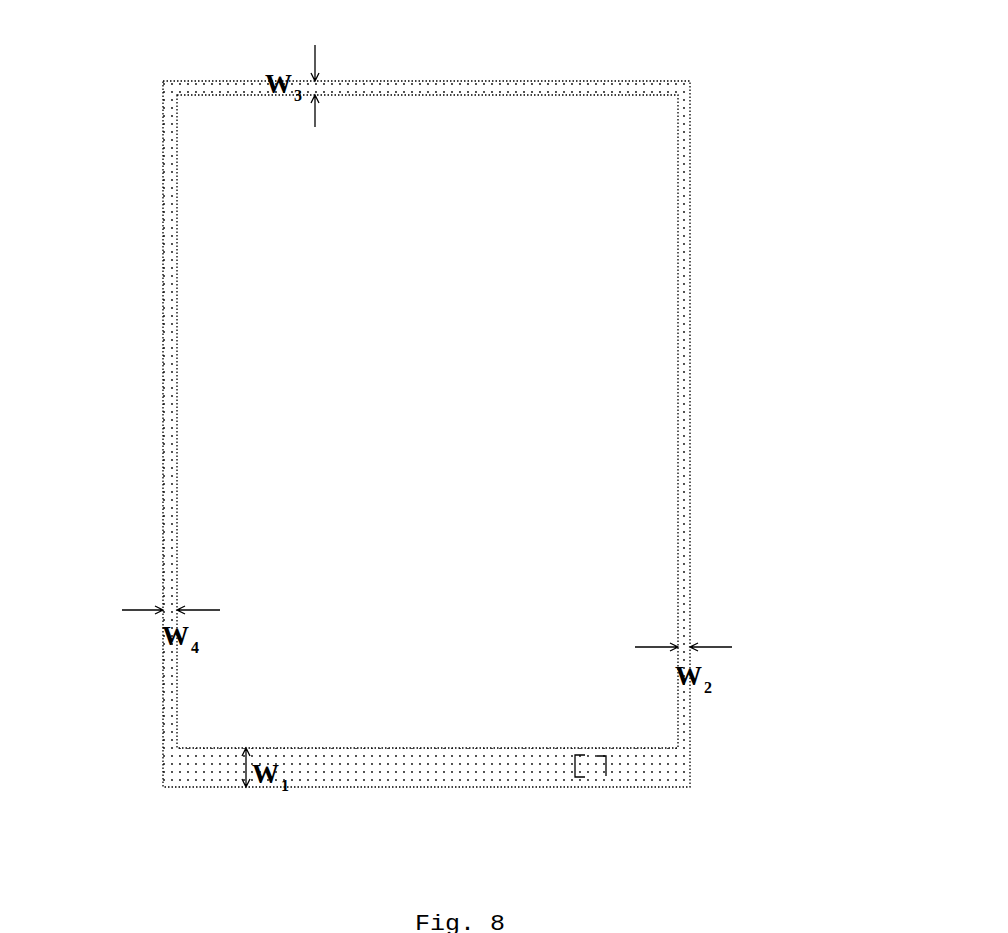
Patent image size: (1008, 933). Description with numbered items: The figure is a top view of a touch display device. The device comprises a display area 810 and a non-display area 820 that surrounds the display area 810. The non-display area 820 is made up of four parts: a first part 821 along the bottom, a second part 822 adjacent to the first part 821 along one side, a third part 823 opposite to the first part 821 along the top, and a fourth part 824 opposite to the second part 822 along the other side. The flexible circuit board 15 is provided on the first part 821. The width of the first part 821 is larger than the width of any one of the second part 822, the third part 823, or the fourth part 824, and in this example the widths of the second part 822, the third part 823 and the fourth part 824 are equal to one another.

The display area 810 is at (672, 238).
The non-display area 820 is at (461, 444).
The first part 821 is at (392, 787).
The second part 822 is at (690, 587).
The third part 823 is at (427, 80).
The fourth part 824 is at (163, 465).
The flexible circuit board 15 is at (582, 786).